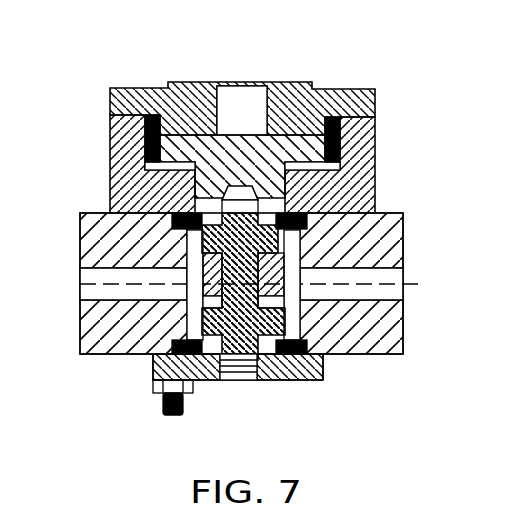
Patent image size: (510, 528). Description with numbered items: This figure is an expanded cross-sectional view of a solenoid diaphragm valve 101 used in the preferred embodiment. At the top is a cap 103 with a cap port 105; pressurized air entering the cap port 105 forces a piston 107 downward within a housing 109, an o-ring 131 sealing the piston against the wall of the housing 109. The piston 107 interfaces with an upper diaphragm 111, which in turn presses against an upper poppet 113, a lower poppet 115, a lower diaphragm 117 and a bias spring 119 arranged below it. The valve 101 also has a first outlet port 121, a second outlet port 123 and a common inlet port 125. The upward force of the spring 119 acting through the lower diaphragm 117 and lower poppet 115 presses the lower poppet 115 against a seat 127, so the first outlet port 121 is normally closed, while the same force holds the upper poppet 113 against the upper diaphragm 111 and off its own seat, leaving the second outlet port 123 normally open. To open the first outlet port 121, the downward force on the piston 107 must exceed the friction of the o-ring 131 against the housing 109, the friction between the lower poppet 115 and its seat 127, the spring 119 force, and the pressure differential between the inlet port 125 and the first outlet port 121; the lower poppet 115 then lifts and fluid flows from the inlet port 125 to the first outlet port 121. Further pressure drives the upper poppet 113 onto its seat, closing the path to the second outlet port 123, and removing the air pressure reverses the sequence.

The solenoid diaphragm valve 101 is at (244, 119).
The cap 103 is at (325, 90).
The cap port 105 is at (233, 103).
The piston 107 is at (168, 87).
The housing 109 is at (374, 167).
The upper diaphragm 111 is at (288, 237).
The upper poppet 113 is at (283, 242).
The lower poppet 115 is at (268, 301).
The lower diaphragm 117 is at (311, 353).
The bias spring 119 is at (253, 378).
The first outlet port 121 is at (80, 294).
The second outlet port 123 is at (395, 297).
The common inlet port 125 is at (190, 270).
The seat 127 is at (186, 312).
The o-ring 131 is at (157, 143).